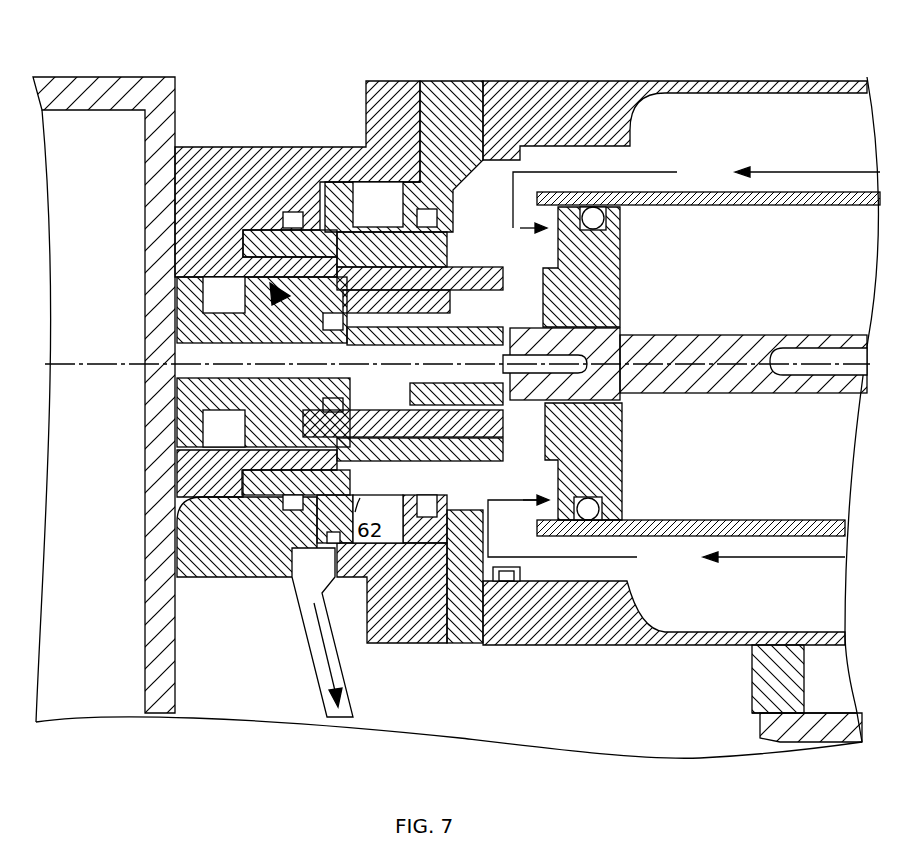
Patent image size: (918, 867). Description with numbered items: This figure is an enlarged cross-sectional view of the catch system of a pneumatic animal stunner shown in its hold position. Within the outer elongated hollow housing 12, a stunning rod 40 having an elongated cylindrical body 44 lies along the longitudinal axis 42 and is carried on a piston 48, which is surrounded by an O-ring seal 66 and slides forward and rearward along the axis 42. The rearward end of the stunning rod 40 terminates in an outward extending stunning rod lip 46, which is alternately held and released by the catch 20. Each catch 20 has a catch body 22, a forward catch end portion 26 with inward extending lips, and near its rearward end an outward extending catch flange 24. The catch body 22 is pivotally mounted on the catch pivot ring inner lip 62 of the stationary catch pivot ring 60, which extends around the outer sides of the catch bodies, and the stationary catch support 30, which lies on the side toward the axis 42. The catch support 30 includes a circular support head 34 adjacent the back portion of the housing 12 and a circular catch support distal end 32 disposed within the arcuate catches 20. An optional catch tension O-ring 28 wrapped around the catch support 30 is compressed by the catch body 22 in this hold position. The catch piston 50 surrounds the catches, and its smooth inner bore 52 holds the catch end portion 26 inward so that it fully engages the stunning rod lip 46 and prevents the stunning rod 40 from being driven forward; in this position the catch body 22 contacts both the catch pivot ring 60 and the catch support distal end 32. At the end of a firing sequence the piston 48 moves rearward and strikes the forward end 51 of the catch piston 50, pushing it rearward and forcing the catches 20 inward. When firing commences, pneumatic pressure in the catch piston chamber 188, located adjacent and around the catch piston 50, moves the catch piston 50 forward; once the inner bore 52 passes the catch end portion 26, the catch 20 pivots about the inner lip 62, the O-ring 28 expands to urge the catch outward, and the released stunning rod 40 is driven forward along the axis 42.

The housing 12 is at (163, 85).
The catch 20 is at (285, 295).
The catch body 22 is at (385, 292).
The catch flange 24 is at (265, 428).
The catch end portion 26 is at (420, 340).
The catch tension O-ring 28 is at (265, 295).
The catch support 30 is at (260, 338).
The catch support distal end 32 is at (495, 281).
The support head 34 is at (245, 322).
The stunning rod 40 is at (760, 334).
The longitudinal axis 42 is at (62, 368).
The cylindrical body 44 is at (855, 398).
The stunning rod lip 46 is at (412, 333).
The piston 48 is at (628, 490).
The catch piston 50 is at (328, 217).
The forward end 51 is at (503, 270).
The inner bore 52 is at (535, 300).
The catch pivot ring 60 is at (178, 478).
The catch pivot ring inner lip 62 is at (327, 263).
The O-ring seal 66 is at (598, 220).
The catch piston chamber 188 is at (312, 555).